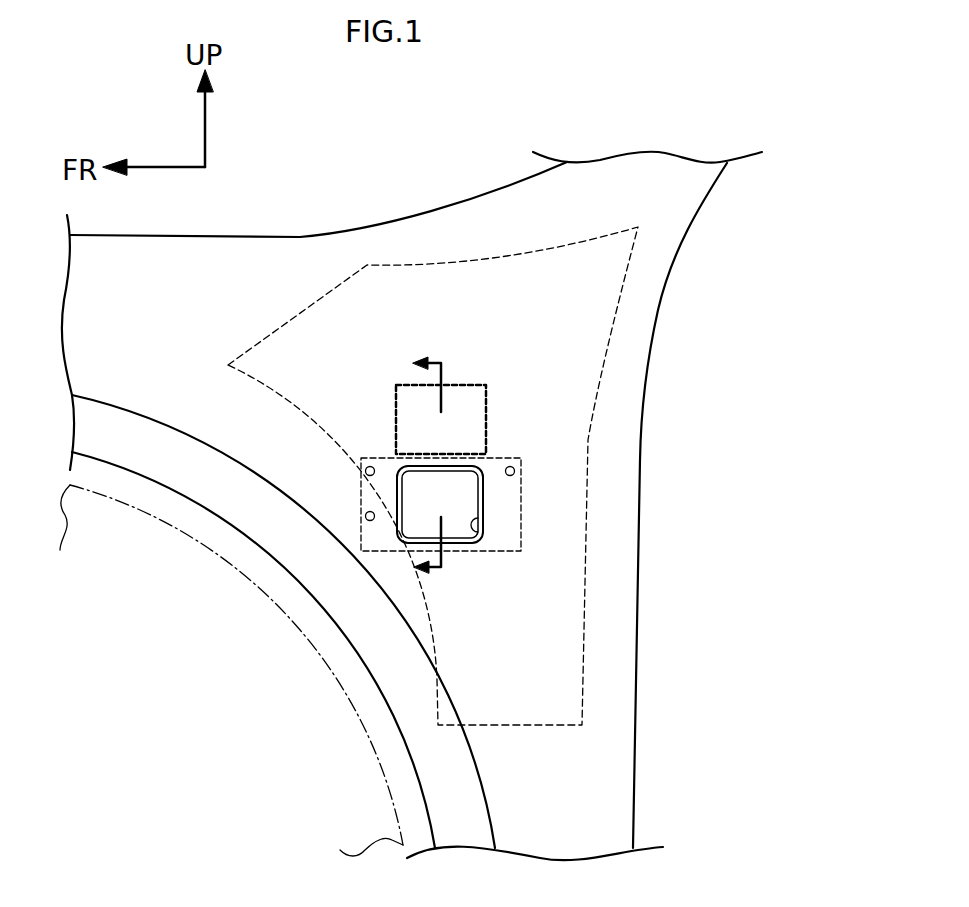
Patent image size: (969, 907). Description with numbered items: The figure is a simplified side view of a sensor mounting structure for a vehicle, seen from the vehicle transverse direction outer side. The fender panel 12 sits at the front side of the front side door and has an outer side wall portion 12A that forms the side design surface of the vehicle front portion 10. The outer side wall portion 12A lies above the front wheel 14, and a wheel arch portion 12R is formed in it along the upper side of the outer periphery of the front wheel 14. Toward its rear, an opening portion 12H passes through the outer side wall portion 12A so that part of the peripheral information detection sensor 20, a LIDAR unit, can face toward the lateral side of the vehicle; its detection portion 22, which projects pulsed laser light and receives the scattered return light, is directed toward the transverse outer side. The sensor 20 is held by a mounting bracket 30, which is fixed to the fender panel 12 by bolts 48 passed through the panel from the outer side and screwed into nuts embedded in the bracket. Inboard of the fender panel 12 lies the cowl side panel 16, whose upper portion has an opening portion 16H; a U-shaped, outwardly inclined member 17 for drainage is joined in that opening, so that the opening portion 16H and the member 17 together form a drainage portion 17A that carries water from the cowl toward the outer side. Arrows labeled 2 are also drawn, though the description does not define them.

The vehicle front portion 10 is at (408, 172).
The fender panel 12 is at (300, 280).
The outer side wall portion 12A is at (248, 287).
The wheel arch portion 12R is at (175, 455).
The opening portion 12H is at (480, 529).
The front wheel 14 is at (205, 540).
The cowl side panel 16 is at (563, 480).
The opening portion 16H is at (452, 392).
The member for drainage 17 is at (490, 413).
The drainage portion 17A is at (458, 446).
The peripheral information detection sensor 20 is at (483, 547).
The detection portion 22 is at (457, 523).
The mounting bracket 30 is at (369, 456).
The bolts 48 is at (365, 475).
The load input direction 2 is at (437, 360).